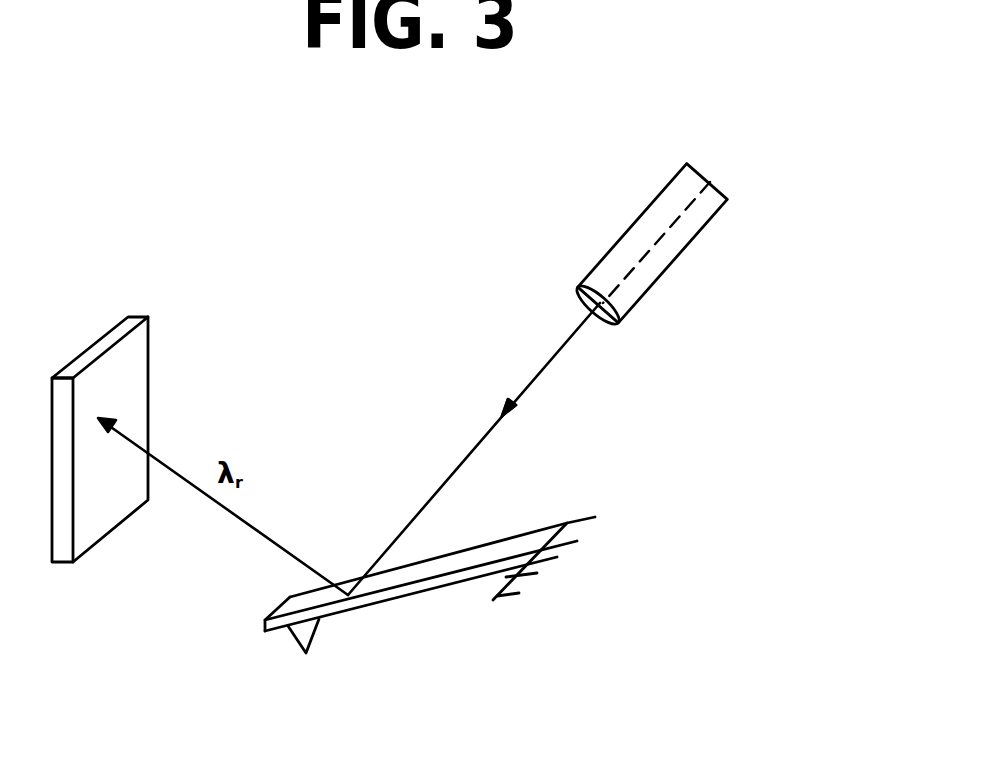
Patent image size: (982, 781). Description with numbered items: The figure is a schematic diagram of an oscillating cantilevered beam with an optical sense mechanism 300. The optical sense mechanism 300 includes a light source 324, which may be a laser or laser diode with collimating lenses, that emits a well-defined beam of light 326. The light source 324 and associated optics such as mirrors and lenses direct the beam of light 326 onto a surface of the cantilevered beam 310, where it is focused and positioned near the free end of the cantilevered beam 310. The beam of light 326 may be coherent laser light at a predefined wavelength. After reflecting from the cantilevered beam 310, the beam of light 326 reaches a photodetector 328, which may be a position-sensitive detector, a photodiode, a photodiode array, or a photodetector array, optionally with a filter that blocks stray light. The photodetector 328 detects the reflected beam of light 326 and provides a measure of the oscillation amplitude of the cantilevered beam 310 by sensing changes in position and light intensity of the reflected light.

The optical sense mechanism 300 is at (147, 166).
The oscillating cantilevered beam 310 is at (415, 623).
The light source 324 is at (717, 183).
The beam of light 326 is at (530, 385).
The photodetector 328 is at (140, 316).